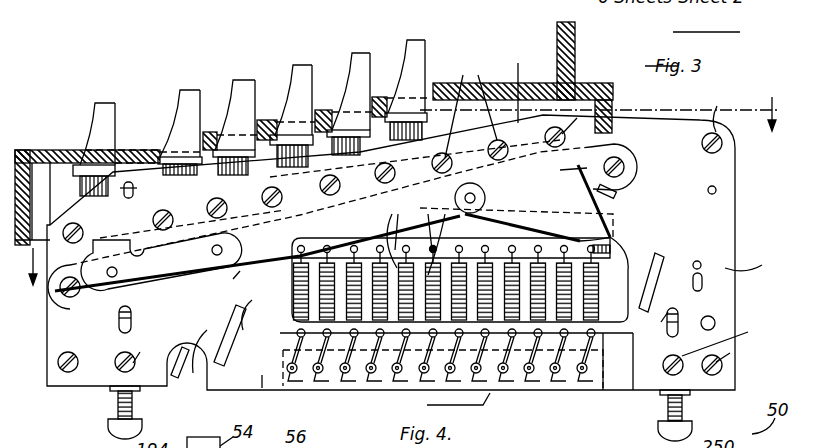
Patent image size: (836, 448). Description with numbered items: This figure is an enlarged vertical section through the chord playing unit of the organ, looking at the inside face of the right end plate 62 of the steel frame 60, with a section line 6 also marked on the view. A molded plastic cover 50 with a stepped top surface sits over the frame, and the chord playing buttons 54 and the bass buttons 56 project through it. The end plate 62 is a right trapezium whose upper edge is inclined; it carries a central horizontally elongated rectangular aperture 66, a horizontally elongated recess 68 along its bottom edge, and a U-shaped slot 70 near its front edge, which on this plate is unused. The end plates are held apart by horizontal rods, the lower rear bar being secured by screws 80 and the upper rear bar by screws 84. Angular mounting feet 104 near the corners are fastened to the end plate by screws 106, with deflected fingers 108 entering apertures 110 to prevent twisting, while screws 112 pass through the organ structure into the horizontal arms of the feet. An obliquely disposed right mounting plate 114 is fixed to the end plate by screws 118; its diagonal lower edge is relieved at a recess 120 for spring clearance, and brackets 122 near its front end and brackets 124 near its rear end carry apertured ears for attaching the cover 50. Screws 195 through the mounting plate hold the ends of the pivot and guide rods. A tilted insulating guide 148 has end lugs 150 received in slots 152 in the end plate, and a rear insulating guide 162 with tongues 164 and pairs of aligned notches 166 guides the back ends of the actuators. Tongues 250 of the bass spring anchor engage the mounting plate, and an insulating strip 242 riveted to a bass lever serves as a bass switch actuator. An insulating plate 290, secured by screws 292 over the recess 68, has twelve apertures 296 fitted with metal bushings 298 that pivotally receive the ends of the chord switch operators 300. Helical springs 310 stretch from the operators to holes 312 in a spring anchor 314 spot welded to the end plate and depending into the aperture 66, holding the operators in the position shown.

The cover 50 is at (568, 76).
The chord playing buttons 54 is at (413, 62).
The bass buttons 56 is at (110, 112).
The frame 60 is at (744, 214).
The right end plate 62 is at (753, 259).
The rectangular aperture 66 is at (632, 232).
The recess 68 is at (652, 322).
The U-shaped slot 70 is at (190, 381).
The screws 80 is at (744, 352).
The screws 84 is at (715, 110).
The mounting feet 104 is at (110, 393).
The screws 106 is at (459, 340).
The fingers 108 is at (135, 316).
The apertures 110 is at (118, 318).
The screws 112 is at (118, 422).
The right mounting plate 114 is at (540, 56).
The screws 118 is at (63, 285).
The relieved recess 120 is at (292, 247).
The brackets 122 is at (183, 268).
The brackets 124 is at (593, 115).
The insulating guide 148 is at (233, 279).
The lugs 150 is at (219, 333).
The slots 152 is at (262, 314).
The insulating guide 162 is at (708, 194).
The tongues 164 is at (684, 254).
The notches 166 is at (633, 257).
The screws 195 is at (471, 107).
The insulating strip 242 is at (262, 388).
The tongues 250 is at (138, 189).
The insulating plate 290 is at (613, 391).
The screws 292 is at (603, 357).
The apertures 296 is at (315, 386).
The metal bushings 298 is at (335, 386).
The chord switch operators 300 is at (413, 384).
The helical springs 310 is at (394, 231).
The holes 312 is at (430, 234).
The spring anchor 314 is at (518, 258).
The section line 6 is at (394, 183).